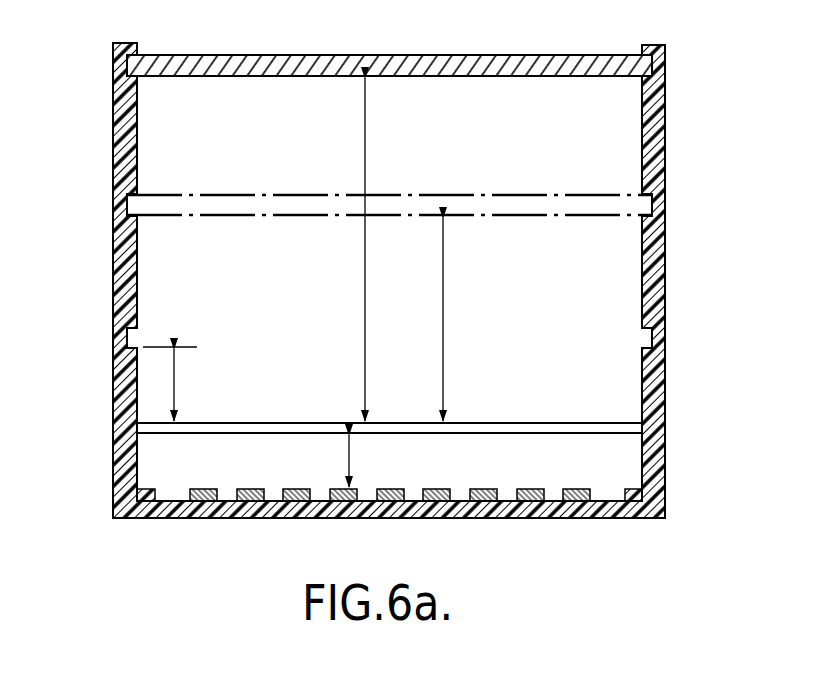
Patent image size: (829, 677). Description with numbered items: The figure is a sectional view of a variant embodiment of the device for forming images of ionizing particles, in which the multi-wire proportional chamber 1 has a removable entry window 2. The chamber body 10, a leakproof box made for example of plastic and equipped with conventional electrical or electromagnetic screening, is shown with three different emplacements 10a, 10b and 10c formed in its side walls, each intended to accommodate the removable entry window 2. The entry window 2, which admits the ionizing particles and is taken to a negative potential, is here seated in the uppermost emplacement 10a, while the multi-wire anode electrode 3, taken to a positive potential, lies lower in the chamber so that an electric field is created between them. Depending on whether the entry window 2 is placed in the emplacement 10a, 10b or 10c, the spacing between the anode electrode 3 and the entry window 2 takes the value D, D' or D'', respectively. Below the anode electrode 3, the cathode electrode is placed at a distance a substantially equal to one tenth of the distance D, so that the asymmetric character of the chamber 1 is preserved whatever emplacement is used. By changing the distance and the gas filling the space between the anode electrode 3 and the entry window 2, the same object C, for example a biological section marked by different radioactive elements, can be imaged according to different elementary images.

The multi-wire proportional chamber 1 is at (650, 122).
The entry window 2 is at (520, 62).
The multi-wire anode electrode 3 is at (605, 428).
The chamber body 10 is at (650, 258).
The emplacement 10a is at (130, 62).
The emplacement 10b is at (130, 204).
The emplacement 10c is at (130, 337).
The object C is at (417, 55).
The distance D is at (374, 249).
The distance D' is at (454, 319).
The distance D'' is at (171, 384).
The distance a is at (356, 461).